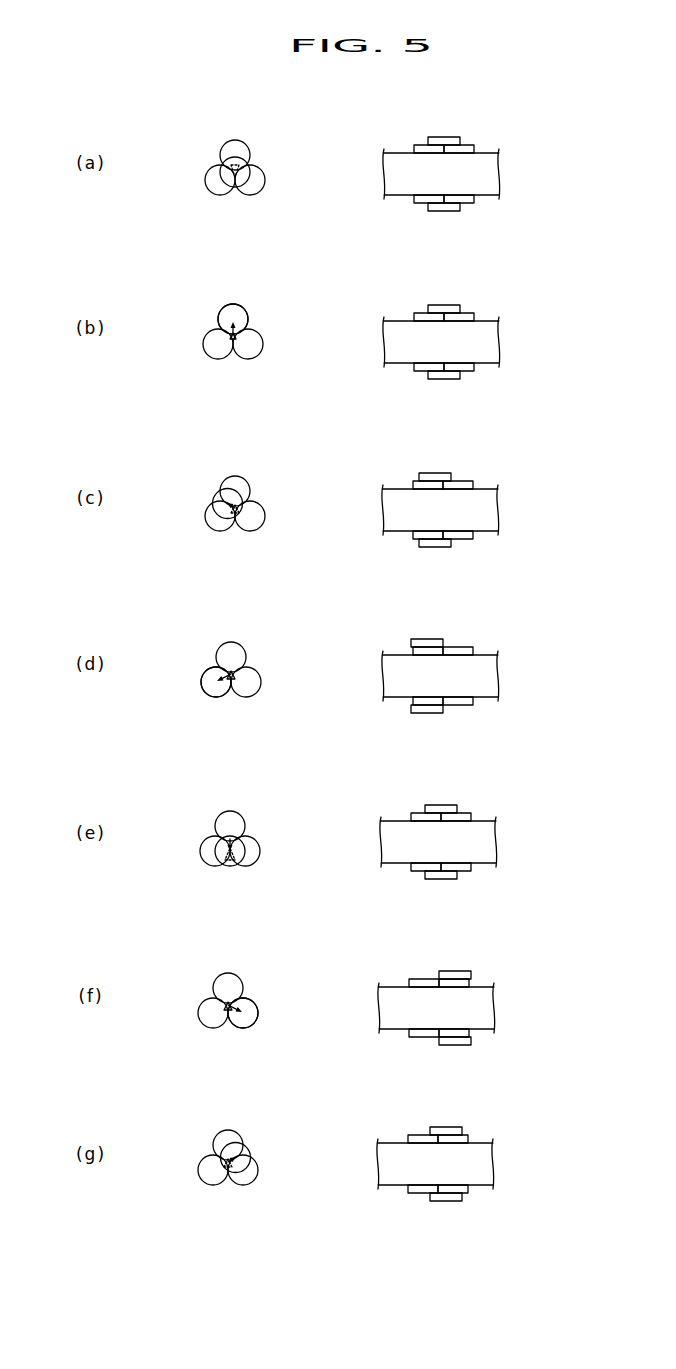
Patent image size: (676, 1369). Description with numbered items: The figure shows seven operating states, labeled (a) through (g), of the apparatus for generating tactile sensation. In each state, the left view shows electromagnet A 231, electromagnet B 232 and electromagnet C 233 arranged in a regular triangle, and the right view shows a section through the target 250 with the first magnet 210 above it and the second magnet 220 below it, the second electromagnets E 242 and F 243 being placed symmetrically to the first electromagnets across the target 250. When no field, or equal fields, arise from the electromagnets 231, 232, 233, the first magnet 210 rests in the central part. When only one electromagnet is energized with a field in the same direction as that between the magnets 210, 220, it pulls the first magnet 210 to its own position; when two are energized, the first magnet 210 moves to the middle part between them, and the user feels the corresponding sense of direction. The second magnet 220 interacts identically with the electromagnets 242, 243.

The first magnet 210 is at (336, 637).
The second magnet 220 is at (445, 718).
The electromagnet A 231 is at (235, 633).
The electromagnet B 232 is at (293, 657).
The electromagnet C 233 is at (371, 648).
The electromagnet E 242 is at (410, 713).
The electromagnet F 243 is at (483, 709).
The target 250 is at (471, 669).